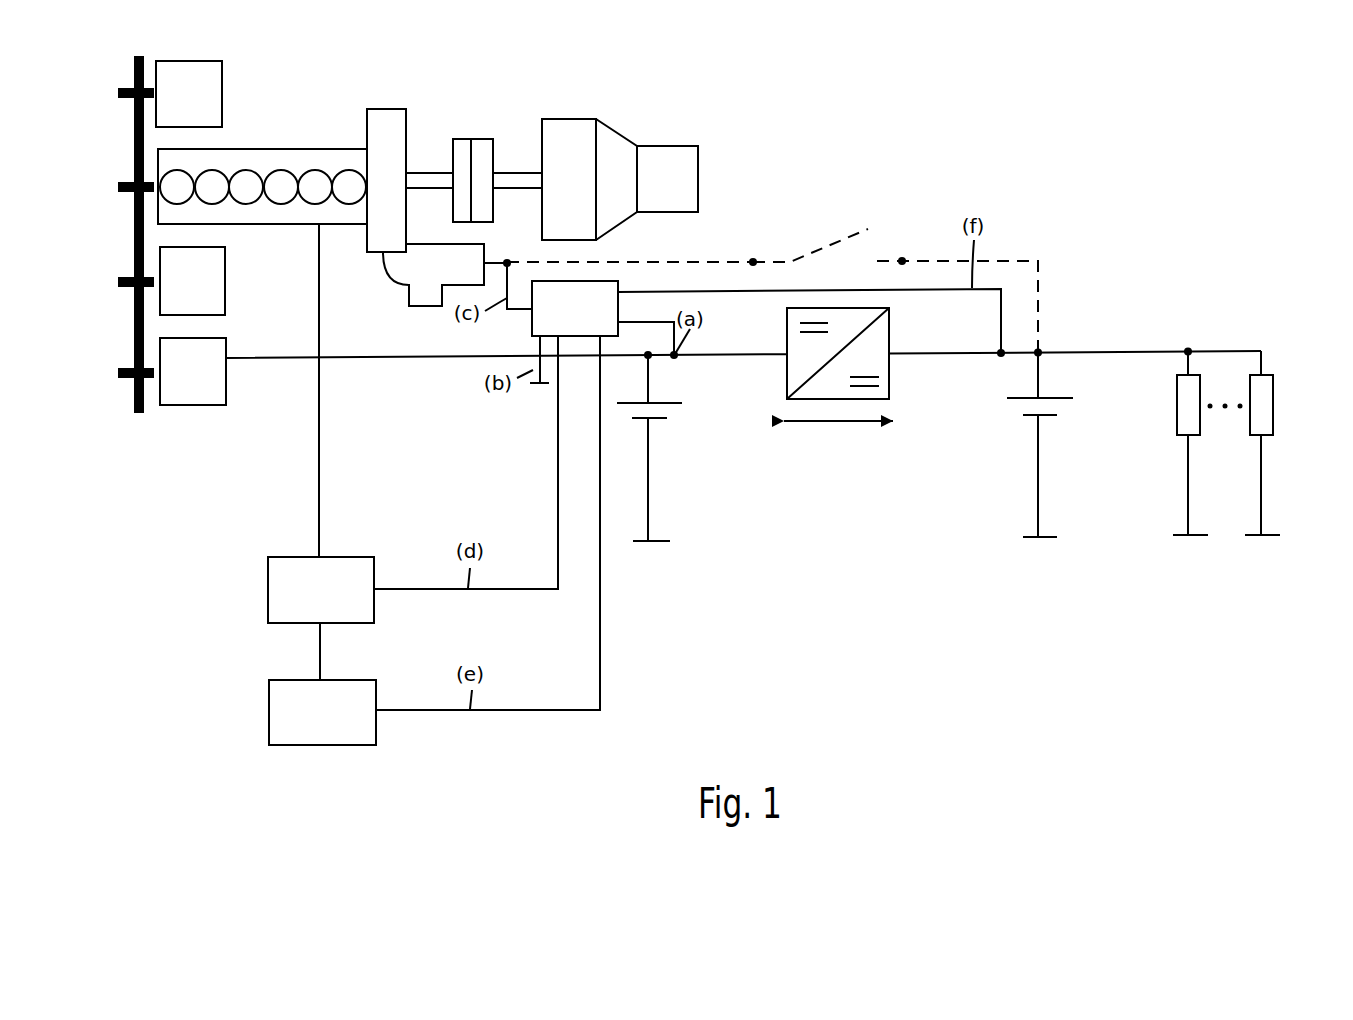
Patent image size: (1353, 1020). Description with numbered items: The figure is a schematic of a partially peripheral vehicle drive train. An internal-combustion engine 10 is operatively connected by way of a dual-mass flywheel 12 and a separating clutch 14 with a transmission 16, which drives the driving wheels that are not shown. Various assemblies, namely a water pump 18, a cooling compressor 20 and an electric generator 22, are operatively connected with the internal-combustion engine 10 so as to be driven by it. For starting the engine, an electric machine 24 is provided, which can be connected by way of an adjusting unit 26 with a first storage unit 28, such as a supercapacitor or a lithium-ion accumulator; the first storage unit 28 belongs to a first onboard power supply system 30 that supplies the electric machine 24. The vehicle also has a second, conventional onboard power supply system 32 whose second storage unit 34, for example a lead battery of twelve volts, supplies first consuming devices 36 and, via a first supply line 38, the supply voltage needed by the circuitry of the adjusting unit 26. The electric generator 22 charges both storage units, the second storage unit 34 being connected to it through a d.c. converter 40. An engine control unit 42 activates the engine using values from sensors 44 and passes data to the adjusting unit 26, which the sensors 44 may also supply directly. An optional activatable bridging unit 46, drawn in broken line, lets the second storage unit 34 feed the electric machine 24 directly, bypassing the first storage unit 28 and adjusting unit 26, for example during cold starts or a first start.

The internal-combustion engine 10 is at (297, 148).
The dual-mass flywheel 12 is at (385, 108).
The separating clutch 14 is at (460, 138).
The transmission 16 is at (567, 118).
The water pump 18 is at (223, 86).
The cooling compressor 20 is at (226, 282).
The electric generator 22 is at (226, 388).
The electric machine 24 is at (424, 308).
The adjusting unit 26 is at (532, 327).
The first storage unit 28 is at (665, 428).
The first onboard power supply system 30 is at (648, 574).
The second onboard power supply system 32 is at (1239, 366).
The second storage unit 34 is at (1053, 425).
The first consuming devices 36 is at (1280, 350).
The first supply line 38 is at (943, 291).
The d.c. converter 40 is at (889, 380).
The engine control unit 42 is at (268, 591).
The sensors 44 is at (269, 712).
The bridging unit 46 is at (846, 210).